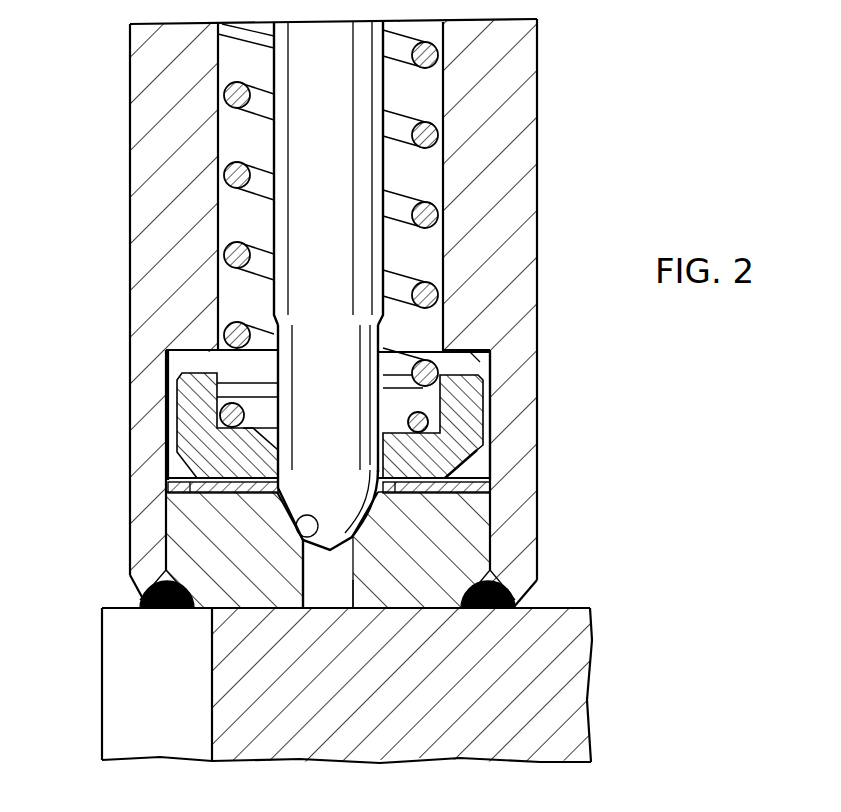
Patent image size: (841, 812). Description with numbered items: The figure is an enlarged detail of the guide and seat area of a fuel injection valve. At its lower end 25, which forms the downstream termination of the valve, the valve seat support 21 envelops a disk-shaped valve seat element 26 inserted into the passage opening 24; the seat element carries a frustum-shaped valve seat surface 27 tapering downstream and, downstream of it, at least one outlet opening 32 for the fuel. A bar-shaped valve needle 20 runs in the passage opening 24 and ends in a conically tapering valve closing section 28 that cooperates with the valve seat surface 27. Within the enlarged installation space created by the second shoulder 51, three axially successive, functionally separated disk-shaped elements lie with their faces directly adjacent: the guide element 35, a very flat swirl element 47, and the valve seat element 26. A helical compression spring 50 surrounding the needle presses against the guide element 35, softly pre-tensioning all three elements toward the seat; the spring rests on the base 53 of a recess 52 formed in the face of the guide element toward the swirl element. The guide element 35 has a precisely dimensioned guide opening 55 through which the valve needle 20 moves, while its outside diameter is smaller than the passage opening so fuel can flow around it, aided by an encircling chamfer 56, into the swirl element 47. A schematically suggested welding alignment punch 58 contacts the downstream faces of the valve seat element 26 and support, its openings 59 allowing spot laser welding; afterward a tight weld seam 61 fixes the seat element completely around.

The valve needle 20 is at (282, 58).
The valve seat support 21 is at (520, 112).
The passage opening 24 is at (218, 135).
The lower end 25 is at (148, 555).
The valve seat element 26 is at (480, 540).
The valve seat surface 27 is at (312, 548).
The valve closing section 28 is at (280, 513).
The outlet opening 32 is at (306, 597).
The guide element 35 is at (192, 400).
The swirl element 47 is at (490, 487).
The compression spring 50 is at (445, 207).
The second shoulder 51 is at (487, 353).
The recess 52 is at (220, 390).
The base 53 is at (398, 422).
The guide opening 55 is at (301, 522).
The chamfer 56 is at (477, 467).
The punch 58 is at (555, 640).
The openings 59 is at (110, 727).
The weld seam 61 is at (170, 612).